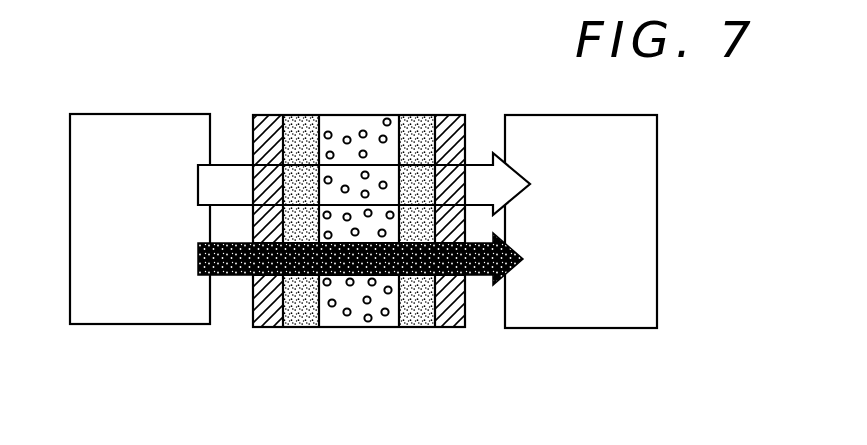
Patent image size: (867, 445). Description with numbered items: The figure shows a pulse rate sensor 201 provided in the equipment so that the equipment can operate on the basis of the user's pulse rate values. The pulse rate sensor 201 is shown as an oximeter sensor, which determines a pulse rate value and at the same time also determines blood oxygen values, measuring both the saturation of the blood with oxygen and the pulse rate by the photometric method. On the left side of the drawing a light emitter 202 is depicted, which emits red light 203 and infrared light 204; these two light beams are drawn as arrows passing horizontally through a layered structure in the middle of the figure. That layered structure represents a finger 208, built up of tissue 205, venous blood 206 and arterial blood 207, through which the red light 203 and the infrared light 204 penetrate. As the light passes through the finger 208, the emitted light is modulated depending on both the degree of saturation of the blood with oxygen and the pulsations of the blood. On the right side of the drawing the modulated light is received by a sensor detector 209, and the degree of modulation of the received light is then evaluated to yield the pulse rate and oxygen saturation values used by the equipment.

The pulse rate sensor 201 is at (346, 228).
The light emitter 202 is at (140, 219).
The red light 203 is at (364, 184).
The infrared light 204 is at (344, 303).
The tissue 205 is at (359, 219).
The venous blood 206 is at (331, 222).
The arterial blood 207 is at (358, 247).
The finger 208 is at (359, 270).
The sensor detector 209 is at (581, 221).